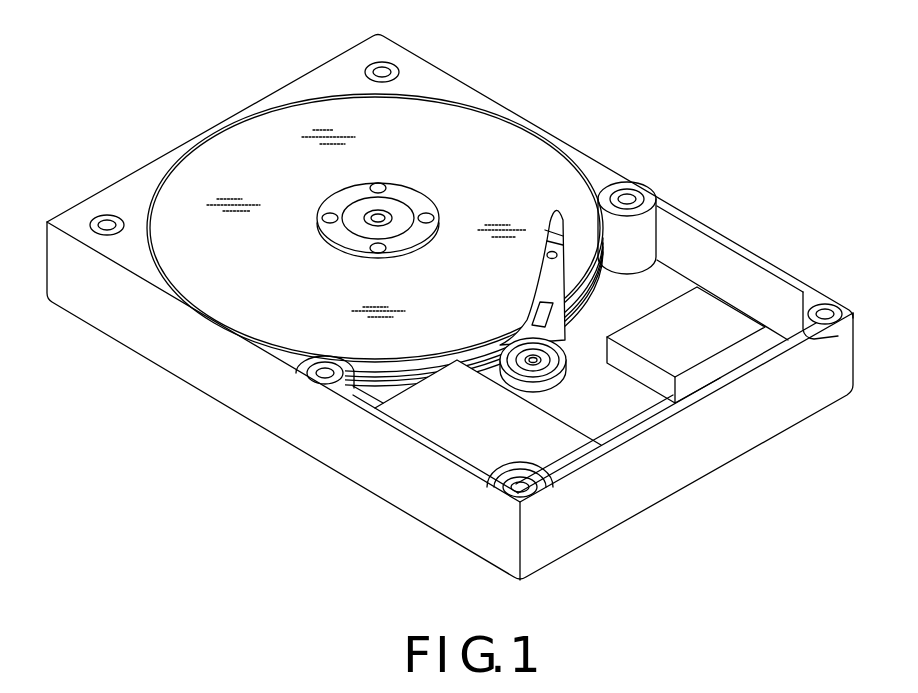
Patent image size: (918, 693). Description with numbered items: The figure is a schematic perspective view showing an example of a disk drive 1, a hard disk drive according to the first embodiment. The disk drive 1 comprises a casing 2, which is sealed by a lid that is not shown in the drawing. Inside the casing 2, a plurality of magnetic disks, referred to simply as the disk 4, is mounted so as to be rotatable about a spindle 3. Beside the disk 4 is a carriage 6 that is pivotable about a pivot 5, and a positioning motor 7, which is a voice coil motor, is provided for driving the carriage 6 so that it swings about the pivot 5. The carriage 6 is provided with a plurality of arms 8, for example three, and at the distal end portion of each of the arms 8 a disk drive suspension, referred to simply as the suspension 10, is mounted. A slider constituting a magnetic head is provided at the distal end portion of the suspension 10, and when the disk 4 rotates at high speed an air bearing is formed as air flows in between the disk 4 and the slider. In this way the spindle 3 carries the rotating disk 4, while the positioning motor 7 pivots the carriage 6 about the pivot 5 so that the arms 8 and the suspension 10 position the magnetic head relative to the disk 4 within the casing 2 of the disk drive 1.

The disk drive 1 is at (745, 112).
The casing 2 is at (247, 403).
The spindle 3 is at (395, 208).
The magnetic disk 4 is at (493, 148).
The pivot 5 is at (540, 370).
The carriage 6 is at (577, 335).
The positioning motor 7 is at (457, 443).
The arm 8 is at (556, 278).
The suspension 10 is at (552, 223).